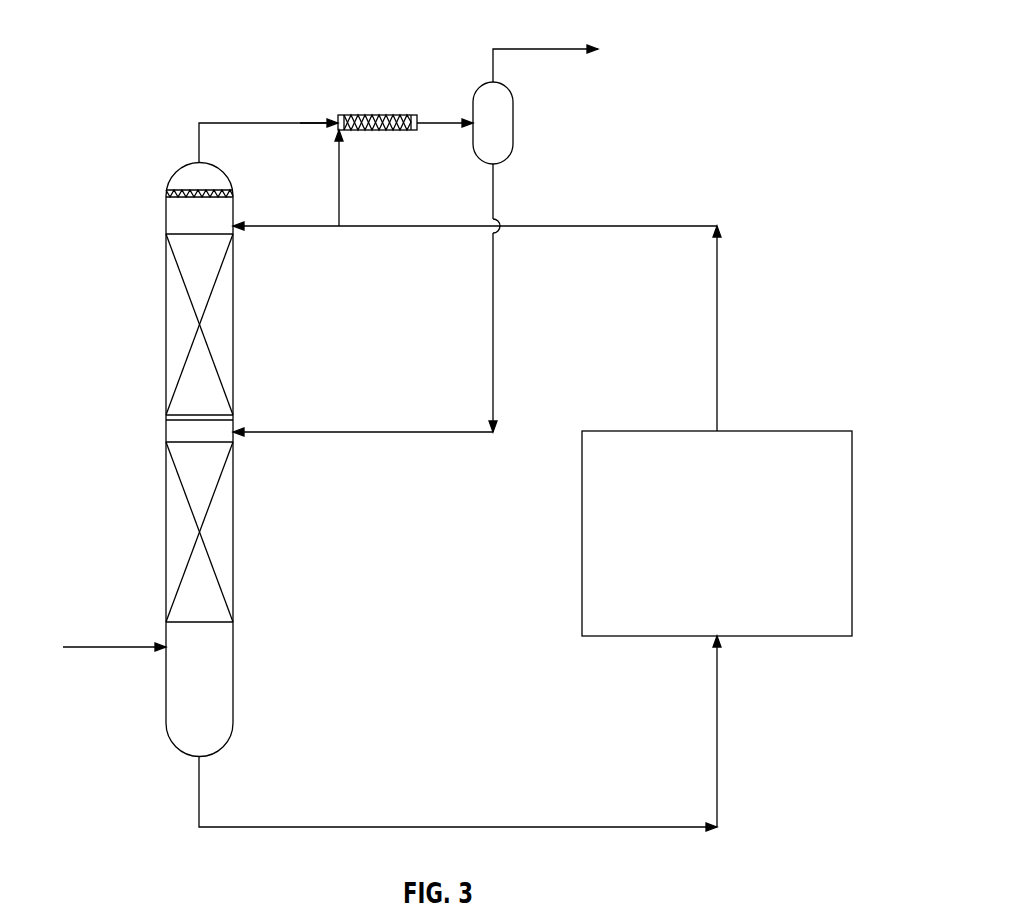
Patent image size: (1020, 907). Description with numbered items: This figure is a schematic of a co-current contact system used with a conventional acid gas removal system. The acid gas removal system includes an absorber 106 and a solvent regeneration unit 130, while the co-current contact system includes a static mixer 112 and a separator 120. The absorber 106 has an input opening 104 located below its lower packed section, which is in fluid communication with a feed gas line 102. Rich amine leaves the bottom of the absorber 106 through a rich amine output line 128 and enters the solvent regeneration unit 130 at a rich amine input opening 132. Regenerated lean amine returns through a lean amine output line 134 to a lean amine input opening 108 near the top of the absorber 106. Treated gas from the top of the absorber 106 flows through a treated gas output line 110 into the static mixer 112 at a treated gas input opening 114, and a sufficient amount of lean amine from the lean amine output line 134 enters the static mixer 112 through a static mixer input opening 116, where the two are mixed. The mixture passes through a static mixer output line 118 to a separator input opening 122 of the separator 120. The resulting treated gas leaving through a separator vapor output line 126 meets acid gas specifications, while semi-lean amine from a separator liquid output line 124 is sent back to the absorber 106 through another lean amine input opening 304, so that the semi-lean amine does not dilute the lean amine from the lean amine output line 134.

The feed gas line 102 is at (63, 648).
The input opening 104 is at (165, 637).
The absorber 106 is at (235, 420).
The lean amine input opening 108 is at (234, 222).
The treated gas output line 110 is at (198, 142).
The static mixer 112 is at (370, 115).
The treated gas input opening 114 is at (338, 118).
The static mixer input opening 116 is at (345, 131).
The static mixer output line 118 is at (432, 126).
The separator 120 is at (514, 142).
The separator input opening 122 is at (473, 118).
The separator liquid output line 124 is at (497, 170).
The separator vapor output line 126 is at (497, 62).
The rich amine output line 128 is at (203, 762).
The solvent regeneration unit 130 is at (582, 536).
The rich amine input opening 132 is at (720, 638).
The lean amine output line 134 is at (720, 427).
The lean amine input opening 304 is at (236, 440).